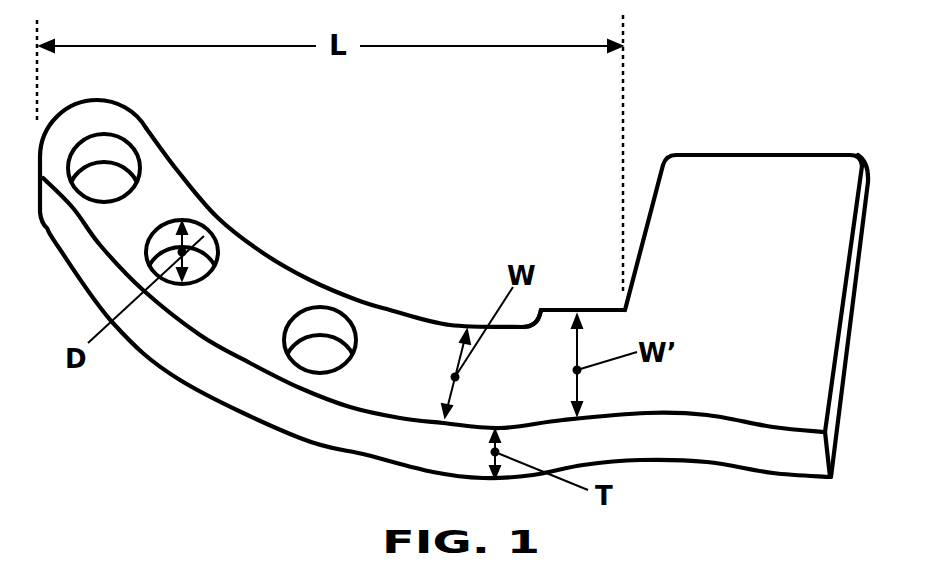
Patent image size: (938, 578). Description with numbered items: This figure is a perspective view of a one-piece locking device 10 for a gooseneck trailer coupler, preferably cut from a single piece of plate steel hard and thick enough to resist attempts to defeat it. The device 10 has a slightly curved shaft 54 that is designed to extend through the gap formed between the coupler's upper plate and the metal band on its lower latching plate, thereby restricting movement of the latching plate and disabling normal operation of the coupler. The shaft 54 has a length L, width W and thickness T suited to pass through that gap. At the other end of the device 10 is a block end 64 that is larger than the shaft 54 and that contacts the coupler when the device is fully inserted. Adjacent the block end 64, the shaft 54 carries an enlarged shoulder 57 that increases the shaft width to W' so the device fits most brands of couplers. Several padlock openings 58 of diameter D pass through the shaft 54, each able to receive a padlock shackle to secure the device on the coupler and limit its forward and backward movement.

The locking device 10 is at (790, 183).
The shaft 54 is at (392, 345).
The shoulder 57 is at (555, 320).
The padlock openings 58 is at (320, 313).
The block end 64 is at (749, 230).